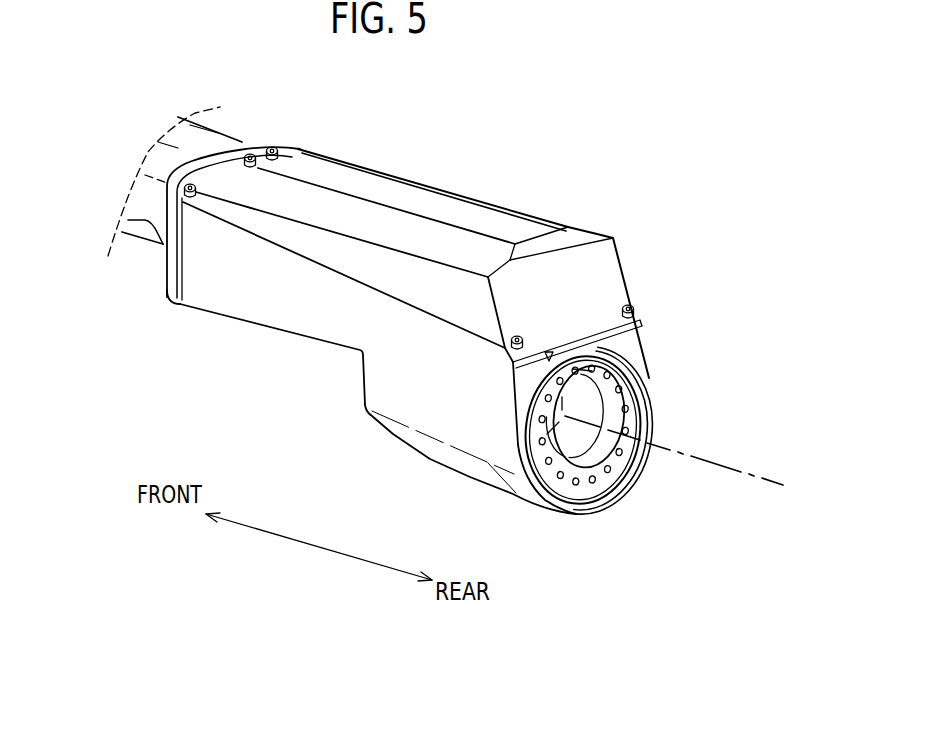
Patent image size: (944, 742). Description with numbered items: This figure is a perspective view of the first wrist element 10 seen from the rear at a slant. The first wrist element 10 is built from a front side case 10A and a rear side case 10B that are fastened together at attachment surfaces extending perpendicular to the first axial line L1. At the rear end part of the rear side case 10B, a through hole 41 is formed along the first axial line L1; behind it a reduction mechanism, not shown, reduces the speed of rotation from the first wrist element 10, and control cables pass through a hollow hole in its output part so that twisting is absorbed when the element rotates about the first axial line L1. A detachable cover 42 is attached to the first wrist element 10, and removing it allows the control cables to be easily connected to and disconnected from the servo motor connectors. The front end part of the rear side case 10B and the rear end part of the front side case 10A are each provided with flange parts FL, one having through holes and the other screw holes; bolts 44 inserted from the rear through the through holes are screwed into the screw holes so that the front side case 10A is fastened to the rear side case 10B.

The first wrist element 10 is at (560, 218).
The front side case 10A is at (134, 246).
The rear side case 10B is at (418, 397).
The through hole 41 is at (593, 476).
The cover 42 is at (387, 189).
The bolts 44 is at (256, 168).
The flange parts FL is at (227, 150).
The first axial line L1 is at (692, 461).